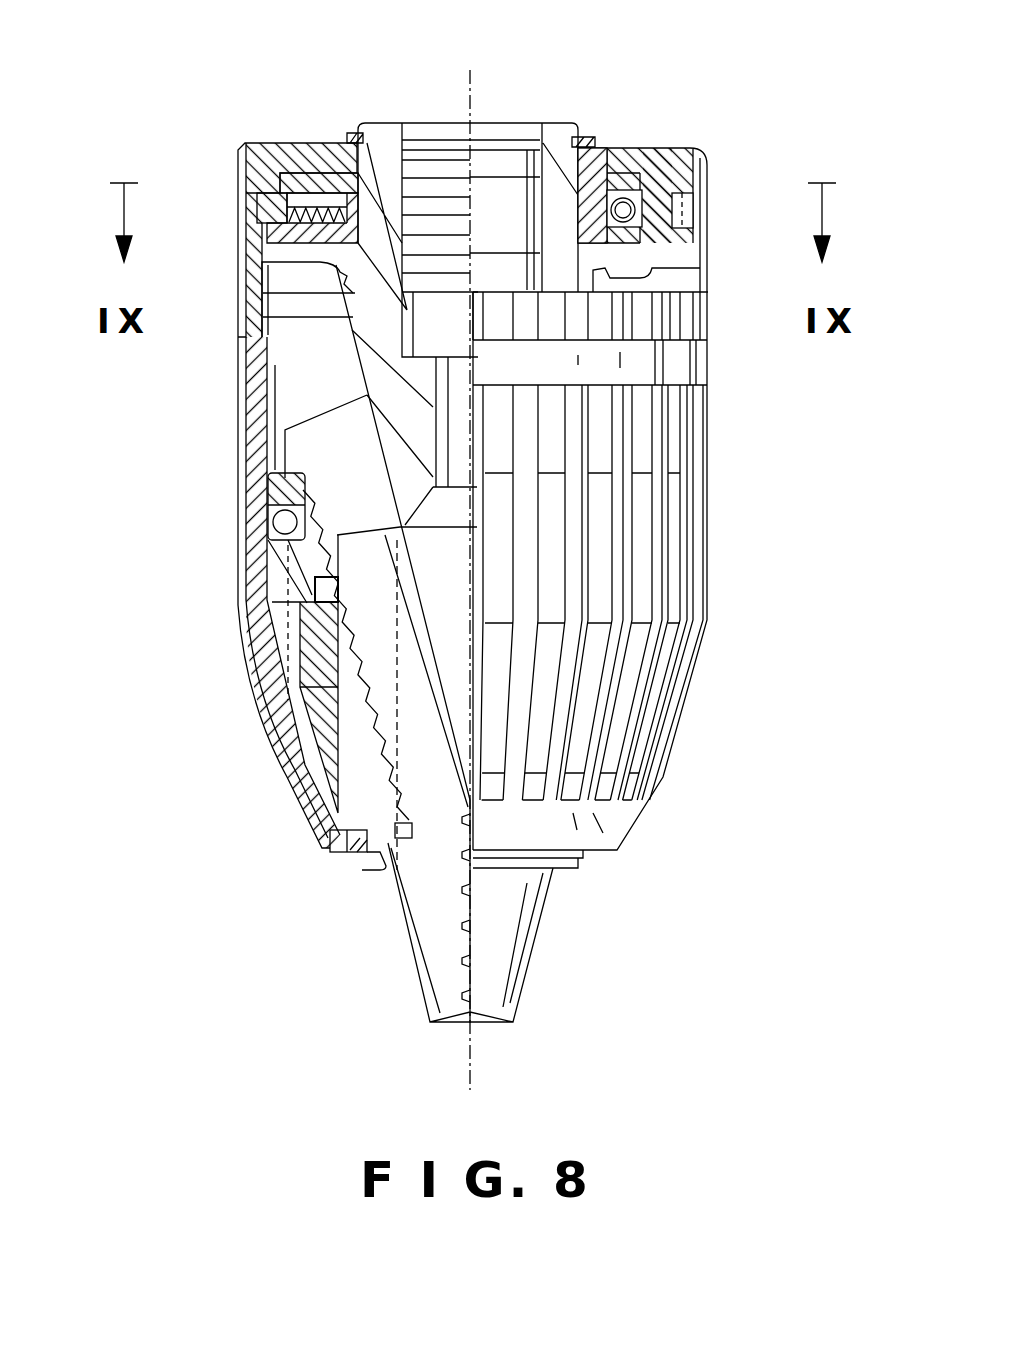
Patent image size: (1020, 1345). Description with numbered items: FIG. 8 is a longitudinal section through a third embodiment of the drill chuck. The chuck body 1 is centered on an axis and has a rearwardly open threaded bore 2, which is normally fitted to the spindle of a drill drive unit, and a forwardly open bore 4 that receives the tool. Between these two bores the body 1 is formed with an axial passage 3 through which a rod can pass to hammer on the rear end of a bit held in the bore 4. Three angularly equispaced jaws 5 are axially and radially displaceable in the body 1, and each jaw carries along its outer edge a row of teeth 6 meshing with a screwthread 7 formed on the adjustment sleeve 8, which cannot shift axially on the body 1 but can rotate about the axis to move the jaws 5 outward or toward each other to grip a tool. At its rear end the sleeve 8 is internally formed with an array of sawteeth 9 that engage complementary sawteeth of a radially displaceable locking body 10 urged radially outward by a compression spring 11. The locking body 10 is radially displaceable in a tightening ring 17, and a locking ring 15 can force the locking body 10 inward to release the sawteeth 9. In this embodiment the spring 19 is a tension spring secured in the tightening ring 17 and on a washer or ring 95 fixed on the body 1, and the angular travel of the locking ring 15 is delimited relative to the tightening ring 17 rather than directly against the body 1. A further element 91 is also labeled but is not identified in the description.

The body 1 is at (260, 293).
The threaded bore 2 is at (440, 165).
The axial passage 3 is at (460, 417).
The bore 4 is at (440, 602).
The jaws 5 is at (427, 913).
The teeth 6 is at (373, 727).
The screwthread 7 is at (300, 560).
The adjustment sleeve 8 is at (250, 573).
The sawteeth 9 is at (672, 213).
The locking body 10 is at (307, 182).
The compression spring 11 is at (265, 212).
The locking ring 15 is at (258, 158).
The tightening ring 17 is at (353, 173).
The spring 19 is at (600, 203).
The ball bearing 91 is at (688, 47).
The washer or ring 95 is at (323, 237).